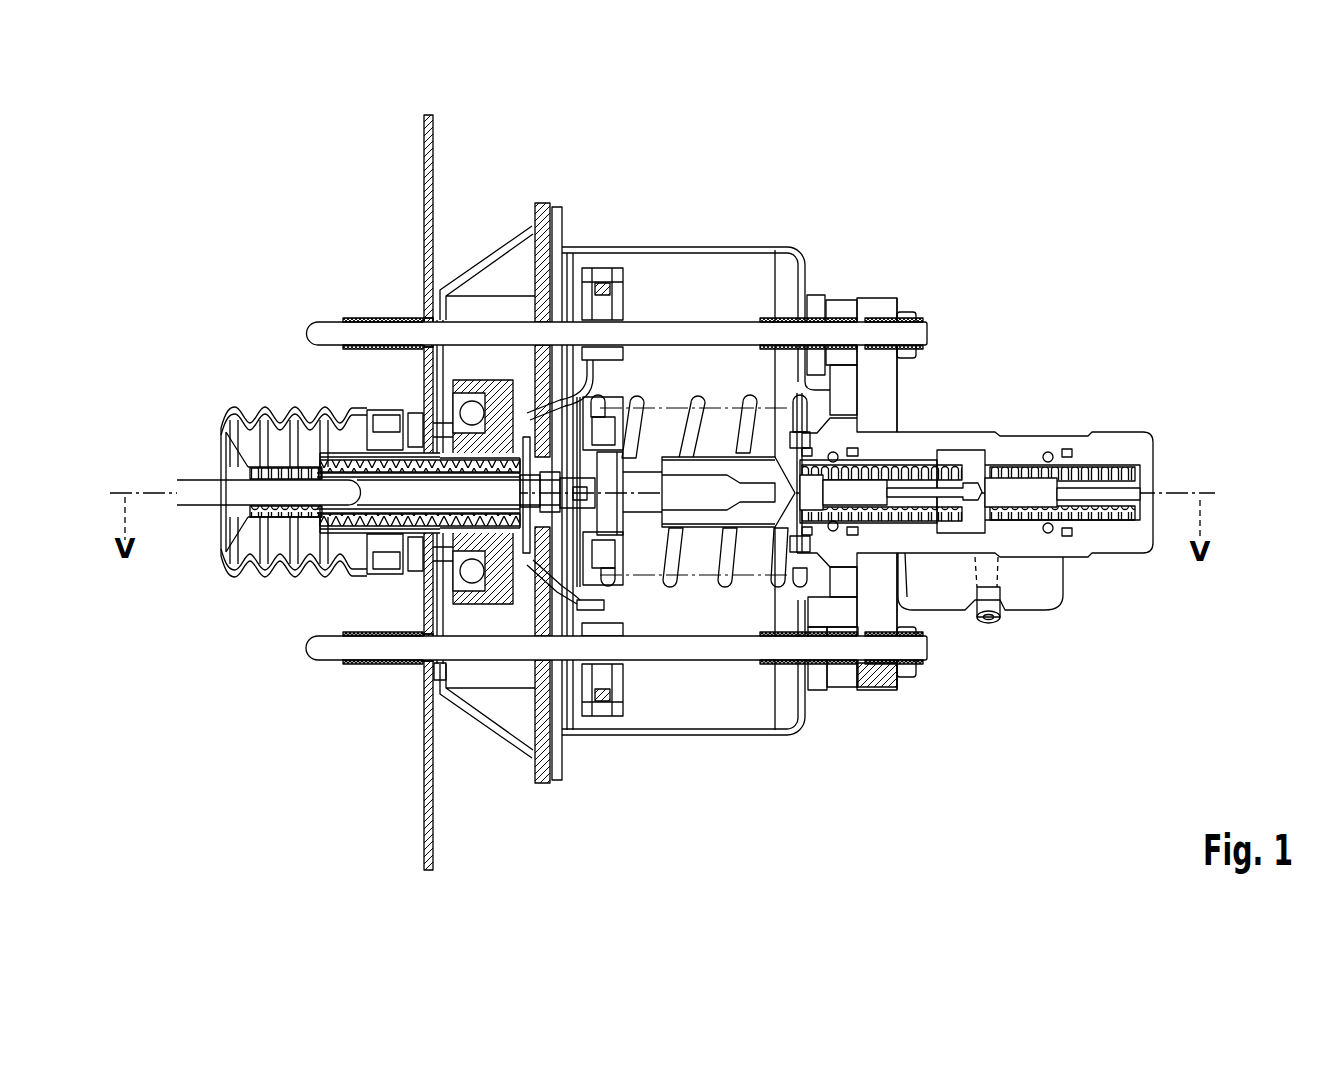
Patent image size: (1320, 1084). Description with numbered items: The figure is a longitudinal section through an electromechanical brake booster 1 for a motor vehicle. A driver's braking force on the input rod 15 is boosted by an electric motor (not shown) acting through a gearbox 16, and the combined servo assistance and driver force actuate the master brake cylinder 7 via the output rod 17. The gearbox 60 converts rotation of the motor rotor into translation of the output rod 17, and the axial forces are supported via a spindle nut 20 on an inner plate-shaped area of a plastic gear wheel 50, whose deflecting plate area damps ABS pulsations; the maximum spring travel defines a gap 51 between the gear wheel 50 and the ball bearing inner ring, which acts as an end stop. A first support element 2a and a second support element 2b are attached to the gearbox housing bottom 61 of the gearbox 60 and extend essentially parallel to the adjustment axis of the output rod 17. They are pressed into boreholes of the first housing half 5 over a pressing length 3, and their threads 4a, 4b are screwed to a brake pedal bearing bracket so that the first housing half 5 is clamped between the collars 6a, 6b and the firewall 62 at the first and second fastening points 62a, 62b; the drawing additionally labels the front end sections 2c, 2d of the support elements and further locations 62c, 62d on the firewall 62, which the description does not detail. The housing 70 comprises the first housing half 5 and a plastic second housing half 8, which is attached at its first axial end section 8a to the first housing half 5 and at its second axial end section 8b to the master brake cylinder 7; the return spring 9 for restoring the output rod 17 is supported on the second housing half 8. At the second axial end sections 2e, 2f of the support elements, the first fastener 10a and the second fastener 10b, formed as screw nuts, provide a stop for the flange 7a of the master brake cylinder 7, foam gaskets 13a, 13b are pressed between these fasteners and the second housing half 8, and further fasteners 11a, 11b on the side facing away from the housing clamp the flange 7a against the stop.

The electromechanical brake booster 1 is at (195, 248).
The first support element 2a is at (653, 333).
The second support element 2b is at (693, 648).
The tie rod front end 2c is at (327, 333).
The tie rod front end 2d is at (317, 660).
The second axial end section of first support element 2e is at (920, 337).
The second axial end section of second support element 2f is at (925, 650).
The pressing length 3 is at (503, 277).
The thread of first support element 4a is at (368, 322).
The thread of second support element 4b is at (350, 662).
The first housing half 5 is at (493, 697).
The collar of first support element 6a is at (547, 308).
The collar of second support element 6b is at (543, 680).
The master brake cylinder 7 is at (1067, 437).
The flange of master brake cylinder 7a is at (860, 605).
The second housing half 8 is at (755, 252).
The first axial end section of second housing half 8a is at (553, 772).
The second axial end section of second housing half 8b is at (803, 707).
The return spring 9 is at (753, 403).
The first fastener 10a is at (843, 308).
The second fastener 10b is at (843, 675).
The further fastener 11a is at (907, 317).
The further fastener 11b is at (907, 670).
The foam gasket 13a is at (813, 303).
The foam gasket 13b is at (820, 678).
The input rod 15 is at (195, 498).
The gearbox 16 is at (392, 377).
The output rod 17 is at (713, 500).
The spindle nut 20 is at (468, 528).
The plastic gear wheel 50 is at (480, 377).
The gap 51 is at (462, 410).
The gearbox 60 is at (233, 645).
The gearbox housing bottom 61 is at (433, 675).
The firewall 62 is at (423, 823).
The first fastening point 62a is at (423, 318).
The second fastening point 62b is at (428, 332).
The plate opening 62c is at (422, 667).
The plate opening 62d is at (428, 647).
The housing 70 is at (580, 792).